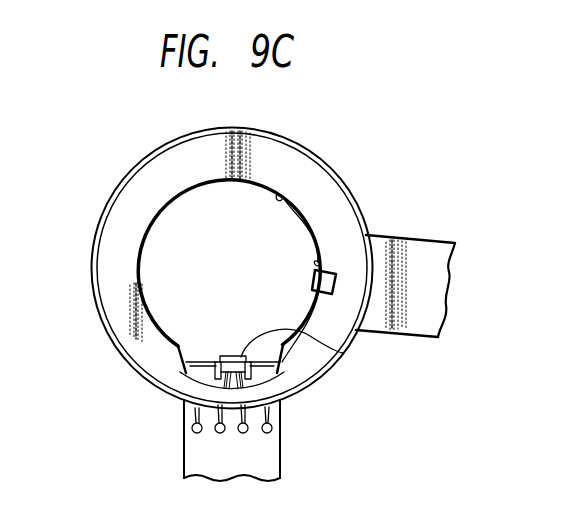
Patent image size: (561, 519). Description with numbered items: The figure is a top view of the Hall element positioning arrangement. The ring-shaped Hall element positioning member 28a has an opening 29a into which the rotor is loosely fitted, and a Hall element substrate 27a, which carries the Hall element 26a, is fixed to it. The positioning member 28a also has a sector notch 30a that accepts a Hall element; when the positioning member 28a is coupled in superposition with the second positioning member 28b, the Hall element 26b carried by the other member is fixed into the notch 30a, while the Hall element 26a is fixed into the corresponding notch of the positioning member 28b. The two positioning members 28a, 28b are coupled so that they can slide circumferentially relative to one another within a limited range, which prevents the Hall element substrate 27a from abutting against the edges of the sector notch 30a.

The Hall element positioning member 28a is at (179, 150).
The Hall element positioning member 28b is at (281, 436).
The opening 29a is at (279, 194).
The Hall element 26a is at (321, 262).
The Hall element 26b is at (343, 353).
The Hall element substrate 27a is at (427, 237).
The sector notch 30a is at (288, 378).